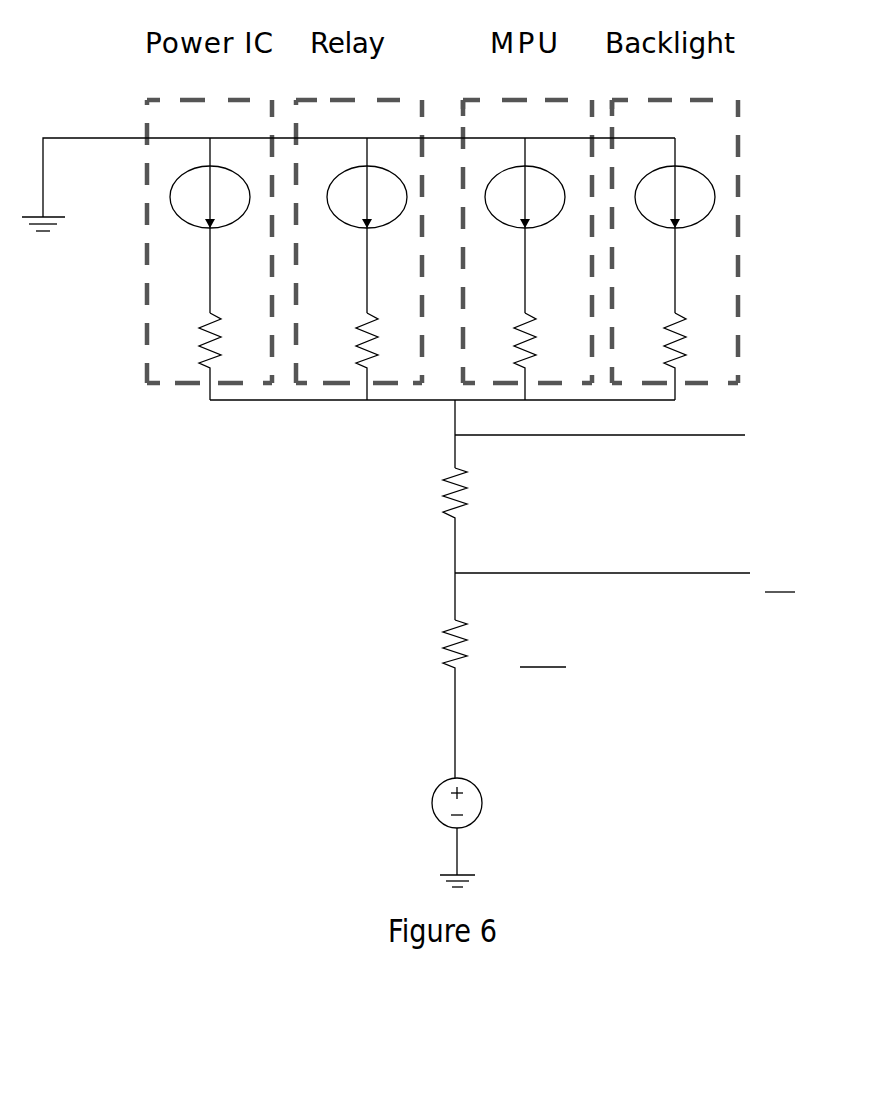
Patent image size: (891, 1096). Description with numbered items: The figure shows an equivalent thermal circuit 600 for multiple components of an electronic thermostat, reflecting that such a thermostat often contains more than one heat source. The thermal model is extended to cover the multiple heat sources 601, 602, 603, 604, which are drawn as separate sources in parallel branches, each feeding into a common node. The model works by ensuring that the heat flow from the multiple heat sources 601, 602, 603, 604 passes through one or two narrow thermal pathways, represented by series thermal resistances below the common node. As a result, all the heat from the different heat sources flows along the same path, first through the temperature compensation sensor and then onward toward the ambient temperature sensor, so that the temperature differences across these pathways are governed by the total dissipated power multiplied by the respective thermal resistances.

The equivalent thermal circuit 600 is at (823, 100).
The heat source 601 is at (220, 224).
The heat source 602 is at (377, 224).
The heat source 603 is at (535, 224).
The heat source 604 is at (685, 224).